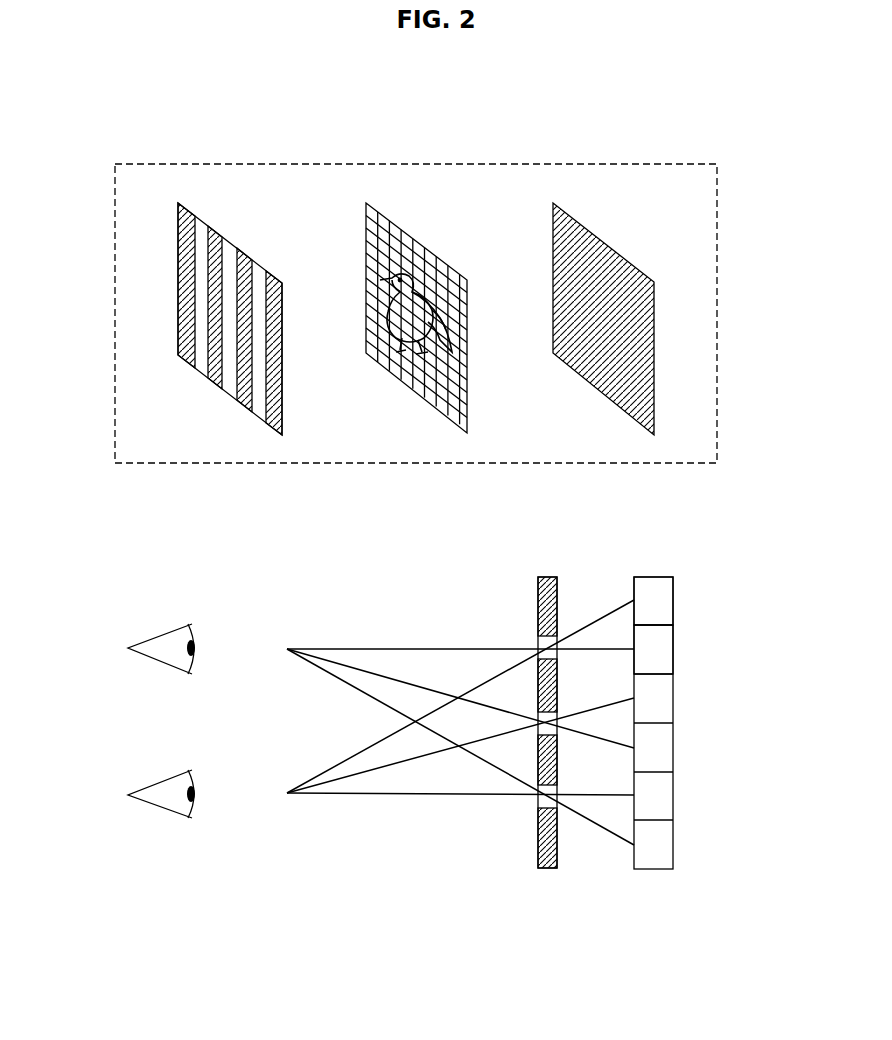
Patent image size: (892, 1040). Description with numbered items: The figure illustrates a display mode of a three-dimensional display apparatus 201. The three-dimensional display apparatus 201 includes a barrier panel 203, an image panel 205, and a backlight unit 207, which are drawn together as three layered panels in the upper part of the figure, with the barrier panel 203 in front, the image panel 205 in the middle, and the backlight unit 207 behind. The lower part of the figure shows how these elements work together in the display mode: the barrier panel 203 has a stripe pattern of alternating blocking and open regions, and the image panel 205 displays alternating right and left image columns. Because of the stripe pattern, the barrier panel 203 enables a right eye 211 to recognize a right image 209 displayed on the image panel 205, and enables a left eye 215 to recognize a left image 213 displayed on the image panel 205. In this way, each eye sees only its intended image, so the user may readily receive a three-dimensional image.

The 3D display apparatus 201 is at (414, 164).
The barrier panel 203 is at (235, 247).
The image panel 205 is at (420, 244).
The backlight unit 207 is at (605, 243).
The right image 209 is at (663, 600).
The left image 213 is at (663, 648).
The left eye 215 is at (253, 637).
The right eye 211 is at (246, 778).